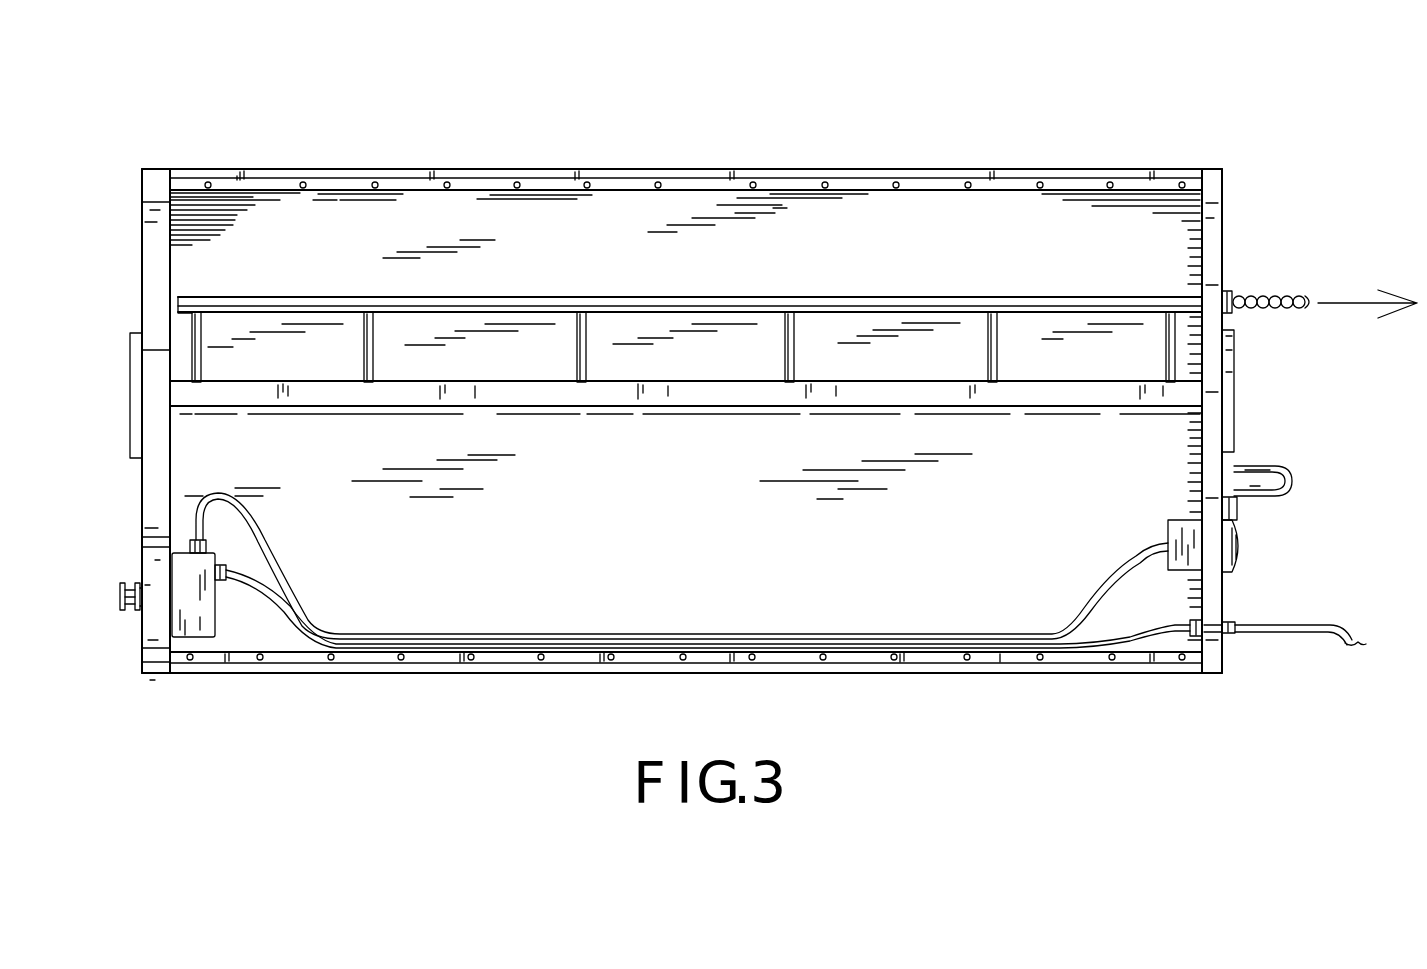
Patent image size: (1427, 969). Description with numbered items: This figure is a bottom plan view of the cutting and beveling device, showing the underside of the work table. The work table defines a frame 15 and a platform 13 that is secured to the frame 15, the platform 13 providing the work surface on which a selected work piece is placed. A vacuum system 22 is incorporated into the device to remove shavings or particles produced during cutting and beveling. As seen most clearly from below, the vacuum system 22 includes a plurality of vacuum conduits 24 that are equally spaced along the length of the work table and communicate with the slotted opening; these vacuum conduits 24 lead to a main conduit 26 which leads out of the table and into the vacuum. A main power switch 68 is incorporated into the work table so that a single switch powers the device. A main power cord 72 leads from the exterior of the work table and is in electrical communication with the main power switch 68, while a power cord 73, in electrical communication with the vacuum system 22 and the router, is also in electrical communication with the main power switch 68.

The platform 13 is at (1168, 236).
The frame 15 is at (983, 170).
The vacuum system 22 is at (277, 224).
The vacuum conduits 24 is at (190, 320).
The main conduit 26 is at (342, 309).
The main power switch 68 is at (118, 594).
The main power cord 72 is at (1253, 632).
The power cord 73 is at (1130, 563).